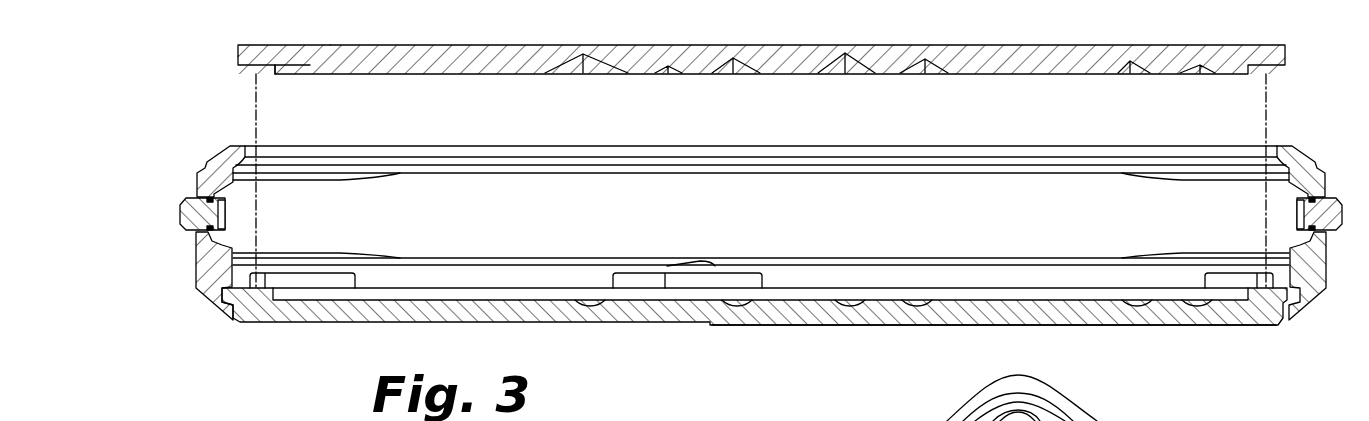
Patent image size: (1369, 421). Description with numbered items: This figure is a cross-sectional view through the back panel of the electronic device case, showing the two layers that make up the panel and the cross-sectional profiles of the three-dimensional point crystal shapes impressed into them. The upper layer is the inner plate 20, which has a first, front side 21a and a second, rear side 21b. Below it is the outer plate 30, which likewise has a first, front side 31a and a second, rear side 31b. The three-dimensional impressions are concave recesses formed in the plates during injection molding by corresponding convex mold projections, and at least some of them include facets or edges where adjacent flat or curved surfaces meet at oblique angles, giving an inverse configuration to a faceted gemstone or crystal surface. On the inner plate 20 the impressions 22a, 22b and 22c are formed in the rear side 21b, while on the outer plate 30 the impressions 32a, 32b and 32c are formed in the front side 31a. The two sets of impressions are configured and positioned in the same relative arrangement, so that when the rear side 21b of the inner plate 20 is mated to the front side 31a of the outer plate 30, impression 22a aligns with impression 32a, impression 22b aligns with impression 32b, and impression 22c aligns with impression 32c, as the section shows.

The inner plate 20 is at (322, 60).
The front side of inner plate 21a is at (300, 38).
The rear side of inner plate 21b is at (300, 82).
The 3D impression 22a is at (568, 83).
The 3D impression 22b is at (836, 83).
The 3D impression 22c is at (1126, 83).
The outer plate 30 is at (373, 312).
The front side of outer plate 31a is at (793, 280).
The rear side of outer plate 31b is at (796, 335).
The 3D impression 32a is at (590, 312).
The 3D impression 32b is at (852, 312).
The 3D impression 32c is at (1137, 314).